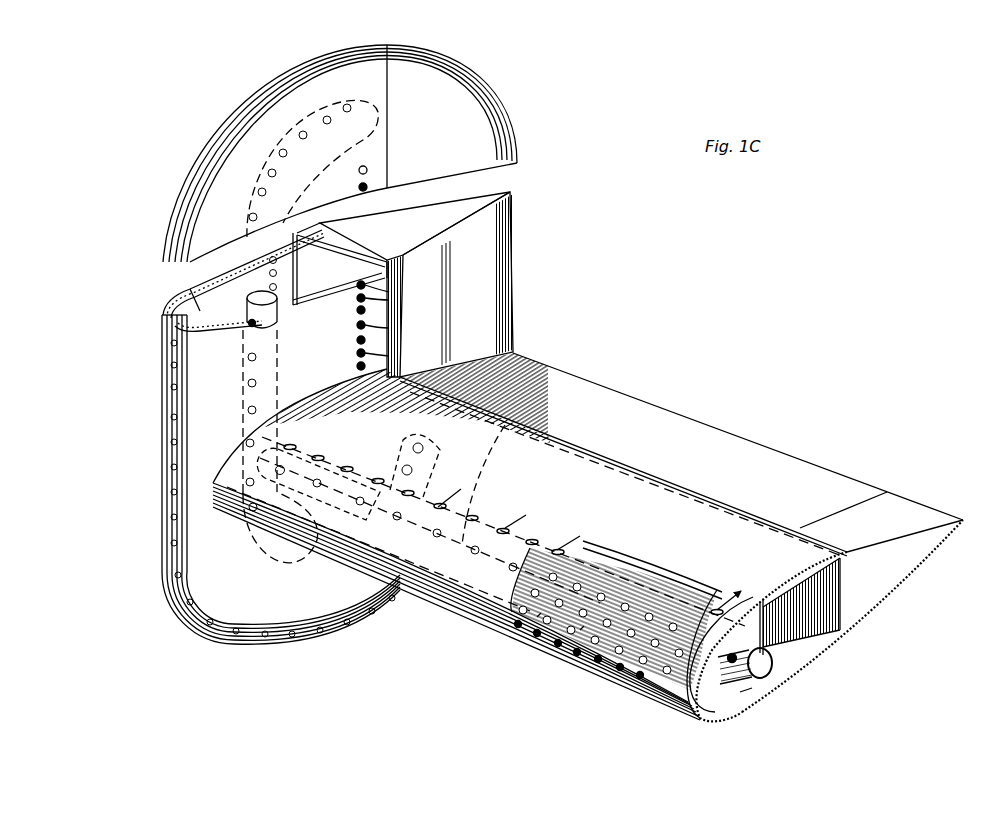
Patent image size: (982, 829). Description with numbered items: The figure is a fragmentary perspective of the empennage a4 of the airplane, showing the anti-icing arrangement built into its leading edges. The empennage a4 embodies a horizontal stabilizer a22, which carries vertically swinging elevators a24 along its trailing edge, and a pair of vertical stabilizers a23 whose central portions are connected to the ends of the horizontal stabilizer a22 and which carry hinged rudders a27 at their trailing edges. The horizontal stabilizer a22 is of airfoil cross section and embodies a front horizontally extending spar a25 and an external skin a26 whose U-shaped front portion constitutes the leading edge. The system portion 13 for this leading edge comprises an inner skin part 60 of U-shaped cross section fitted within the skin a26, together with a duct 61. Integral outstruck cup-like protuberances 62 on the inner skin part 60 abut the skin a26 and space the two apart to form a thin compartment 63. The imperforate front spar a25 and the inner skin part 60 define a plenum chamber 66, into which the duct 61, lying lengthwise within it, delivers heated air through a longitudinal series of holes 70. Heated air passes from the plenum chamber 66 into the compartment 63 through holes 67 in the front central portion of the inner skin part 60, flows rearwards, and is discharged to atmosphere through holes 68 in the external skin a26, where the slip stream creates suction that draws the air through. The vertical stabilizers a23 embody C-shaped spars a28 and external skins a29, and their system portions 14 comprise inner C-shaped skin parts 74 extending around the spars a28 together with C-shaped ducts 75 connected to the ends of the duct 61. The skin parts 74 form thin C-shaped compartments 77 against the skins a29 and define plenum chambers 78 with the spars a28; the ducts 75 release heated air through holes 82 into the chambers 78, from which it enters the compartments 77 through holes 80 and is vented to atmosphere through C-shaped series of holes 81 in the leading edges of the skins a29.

The system portion 13 is at (580, 630).
The system portion 14 is at (208, 291).
The inner skin part 60 is at (537, 617).
The duct 61 is at (773, 661).
The cup-like protuberances 62 is at (630, 592).
The compartment 63 is at (733, 636).
The plenum chamber 66 is at (747, 691).
The holes 67 is at (632, 643).
The holes 68 is at (503, 530).
The holes 70 is at (731, 664).
The inner C-shaped skin parts 74 is at (200, 311).
The C-shaped ducts 75 is at (307, 160).
The C-shaped compartments 77 is at (178, 350).
The plenum chambers 78 is at (250, 327).
The holes 80 is at (198, 331).
The holes 81 is at (369, 170).
The holes 82 is at (298, 136).
The empennage a4 is at (797, 450).
The horizontal stabilizer a22 is at (667, 547).
The vertical stabilizers a23 is at (223, 609).
The elevators a24 is at (690, 428).
The front spar a25 is at (764, 642).
The external skin a26 is at (845, 560).
The rudders a27 is at (500, 280).
The C-shaped spars a28 is at (340, 264).
The external skins a29 is at (182, 295).